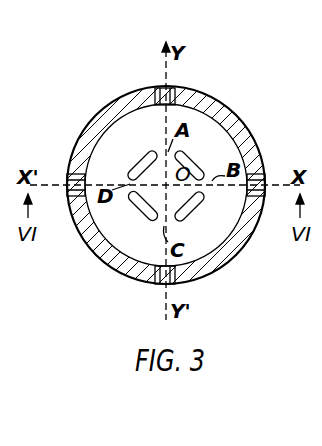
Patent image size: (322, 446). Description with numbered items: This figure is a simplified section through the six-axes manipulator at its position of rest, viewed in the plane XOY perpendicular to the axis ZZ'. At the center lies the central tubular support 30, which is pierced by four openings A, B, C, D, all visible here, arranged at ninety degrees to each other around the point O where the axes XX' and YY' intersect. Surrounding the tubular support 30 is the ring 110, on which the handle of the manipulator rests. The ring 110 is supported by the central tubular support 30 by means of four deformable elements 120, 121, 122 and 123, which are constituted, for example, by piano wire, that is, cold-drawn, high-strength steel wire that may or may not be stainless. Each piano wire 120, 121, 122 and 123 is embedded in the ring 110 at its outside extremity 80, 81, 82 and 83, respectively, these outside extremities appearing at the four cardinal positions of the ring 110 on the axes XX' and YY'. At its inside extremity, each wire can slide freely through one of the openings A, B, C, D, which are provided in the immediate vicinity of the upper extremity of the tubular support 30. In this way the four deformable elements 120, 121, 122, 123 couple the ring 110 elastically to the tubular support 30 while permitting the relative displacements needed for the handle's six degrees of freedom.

The central tubular support 30 is at (192, 165).
The outside extremity of piano wire 80 is at (263, 177).
The outside extremity of piano wire 81 is at (156, 91).
The outside extremity of piano wire 82 is at (70, 168).
The outside extremity of piano wire 83 is at (180, 284).
The ring 110 is at (220, 110).
The deformable element 120 is at (226, 188).
The deformable element 121 is at (160, 123).
The deformable element 122 is at (117, 177).
The deformable element 123 is at (166, 243).